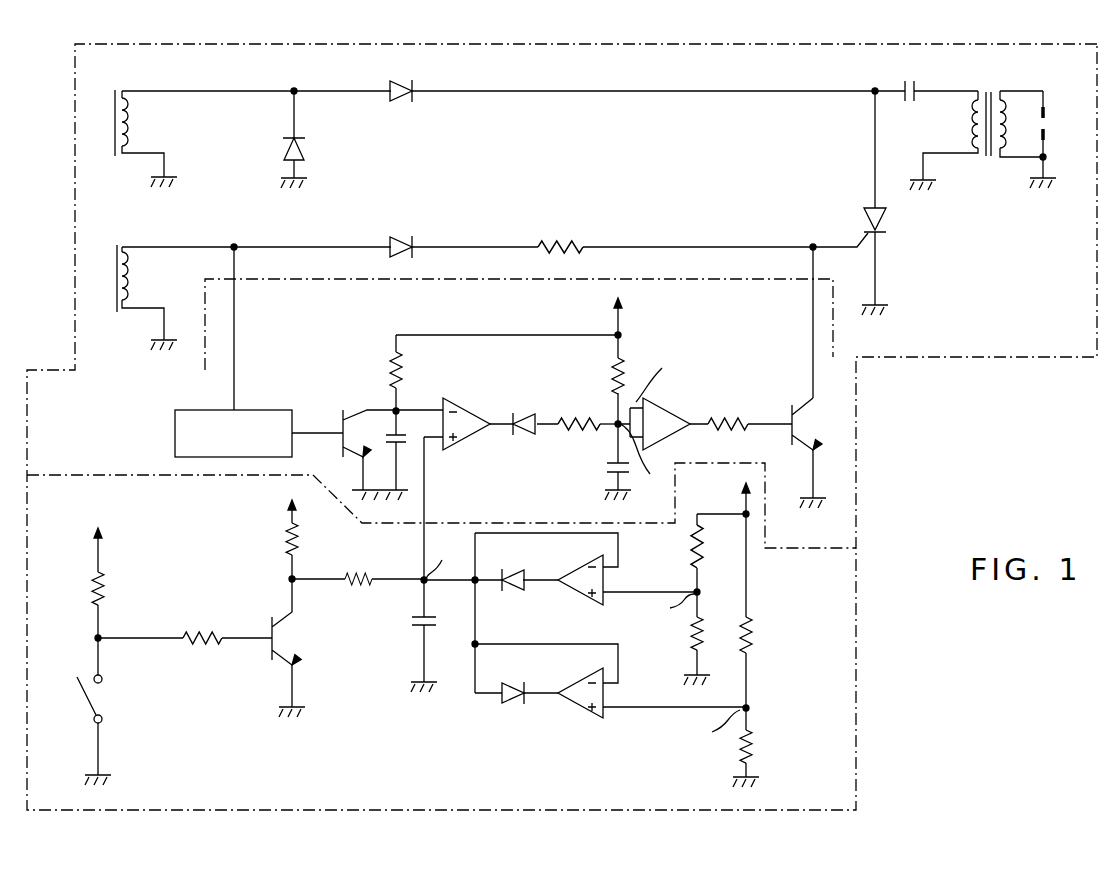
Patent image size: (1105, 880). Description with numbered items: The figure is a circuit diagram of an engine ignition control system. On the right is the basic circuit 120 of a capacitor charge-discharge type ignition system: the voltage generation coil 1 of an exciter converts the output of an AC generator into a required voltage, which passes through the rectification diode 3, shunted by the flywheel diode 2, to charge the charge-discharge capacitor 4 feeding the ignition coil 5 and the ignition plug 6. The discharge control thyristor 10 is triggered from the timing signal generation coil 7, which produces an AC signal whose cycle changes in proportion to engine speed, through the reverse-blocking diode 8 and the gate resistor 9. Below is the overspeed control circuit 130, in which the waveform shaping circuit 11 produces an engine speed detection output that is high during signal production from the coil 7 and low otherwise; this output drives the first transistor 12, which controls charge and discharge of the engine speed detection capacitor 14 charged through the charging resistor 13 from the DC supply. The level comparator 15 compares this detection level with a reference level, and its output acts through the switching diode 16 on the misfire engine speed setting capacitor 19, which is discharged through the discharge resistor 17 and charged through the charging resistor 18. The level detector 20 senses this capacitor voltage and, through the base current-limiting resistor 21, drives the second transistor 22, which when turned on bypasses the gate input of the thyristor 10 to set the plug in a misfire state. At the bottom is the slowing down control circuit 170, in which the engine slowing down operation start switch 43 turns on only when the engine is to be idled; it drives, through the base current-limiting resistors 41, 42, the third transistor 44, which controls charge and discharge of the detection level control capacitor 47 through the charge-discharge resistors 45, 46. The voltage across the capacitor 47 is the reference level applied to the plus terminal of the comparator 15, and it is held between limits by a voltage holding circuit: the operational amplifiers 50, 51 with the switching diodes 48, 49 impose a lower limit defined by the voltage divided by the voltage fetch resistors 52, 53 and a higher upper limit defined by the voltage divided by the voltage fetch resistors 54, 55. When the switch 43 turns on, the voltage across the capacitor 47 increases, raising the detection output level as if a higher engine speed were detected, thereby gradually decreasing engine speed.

The voltage generation coil of an exciter 1 is at (120, 90).
The flywheel diode 2 is at (282, 150).
The rectification diode 3 is at (402, 104).
The charge-discharge capacitor 4 is at (911, 93).
The ignition coil 5 is at (988, 158).
The ignition plug 6 is at (1050, 132).
The timing signal generation coil 7 is at (120, 241).
The reverse-blocking diode 8 is at (414, 240).
The gate resistor 9 is at (578, 238).
The discharge control thyristor 10 is at (888, 222).
The waveform shaping circuit 11 is at (175, 440).
The first transistor 12 is at (342, 408).
The charging resistor 13 is at (392, 366).
The engine speed detection capacitor 14 is at (410, 440).
The level comparator 15 is at (460, 445).
The switching diode 16 is at (524, 435).
The discharge resistor 17 is at (568, 427).
The charging resistor 18 is at (610, 372).
The misfire engine speed setting capacitor 19 is at (604, 468).
The level detector 20 is at (678, 436).
The base current-limiting resistor 21 is at (740, 426).
The second transistor 22 is at (798, 413).
The base current-limiting resistor 41 is at (92, 590).
The base current-limiting resistor 42 is at (204, 642).
The engine slowing down operation start switch 43 is at (102, 702).
The third transistor 44 is at (282, 614).
The charge-discharge resistor 45 is at (286, 540).
The charge-discharge resistor 46 is at (356, 584).
The detection level control capacitor 47 is at (436, 626).
The switching diode 48 is at (514, 594).
The switching diode 49 is at (510, 711).
The operational amplifier 50 is at (577, 596).
The operational amplifier 51 is at (578, 713).
The voltage fetch resistor 52 is at (704, 562).
The voltage fetch resistor 53 is at (708, 643).
The voltage fetch resistor 54 is at (750, 622).
The voltage fetch resistor 55 is at (750, 732).
The basic circuit of the ignition system 120 is at (1012, 360).
The overspeed control circuit 130 is at (929, 508).
The slowing down control circuit 170 is at (936, 667).